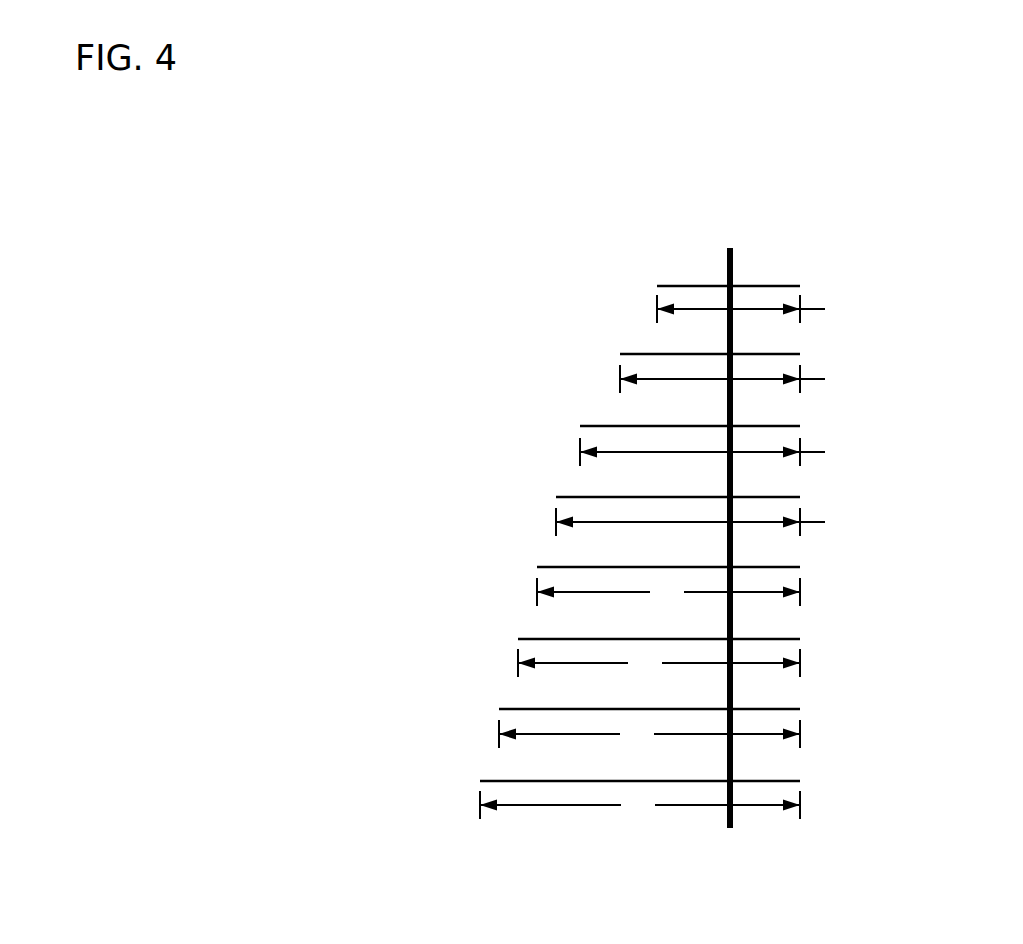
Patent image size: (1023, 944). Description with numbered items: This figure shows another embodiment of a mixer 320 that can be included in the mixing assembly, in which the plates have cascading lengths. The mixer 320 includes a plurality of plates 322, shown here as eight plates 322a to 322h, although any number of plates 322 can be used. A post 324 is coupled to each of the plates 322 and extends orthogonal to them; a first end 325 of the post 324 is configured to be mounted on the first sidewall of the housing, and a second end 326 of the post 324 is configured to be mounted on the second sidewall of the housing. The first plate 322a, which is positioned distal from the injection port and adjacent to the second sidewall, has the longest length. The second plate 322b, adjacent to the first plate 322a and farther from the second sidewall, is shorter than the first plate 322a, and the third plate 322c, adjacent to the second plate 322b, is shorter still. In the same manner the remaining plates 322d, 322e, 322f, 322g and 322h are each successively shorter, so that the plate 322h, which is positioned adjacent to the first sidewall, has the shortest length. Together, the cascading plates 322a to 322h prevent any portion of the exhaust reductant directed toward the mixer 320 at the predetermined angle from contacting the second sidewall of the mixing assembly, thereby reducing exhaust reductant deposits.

The mixer 320 is at (818, 228).
The plurality of plates 322 is at (857, 497).
The first plate 322a is at (492, 779).
The second plate 322b is at (512, 707).
The third plate 322c is at (531, 637).
The plate 322d is at (552, 565).
The plate 322e is at (570, 495).
The plate 322f is at (592, 424).
The plate 322g is at (650, 352).
The plate 322h is at (663, 284).
The post 324 is at (733, 763).
The first end 325 is at (730, 248).
The second end 326 is at (733, 830).